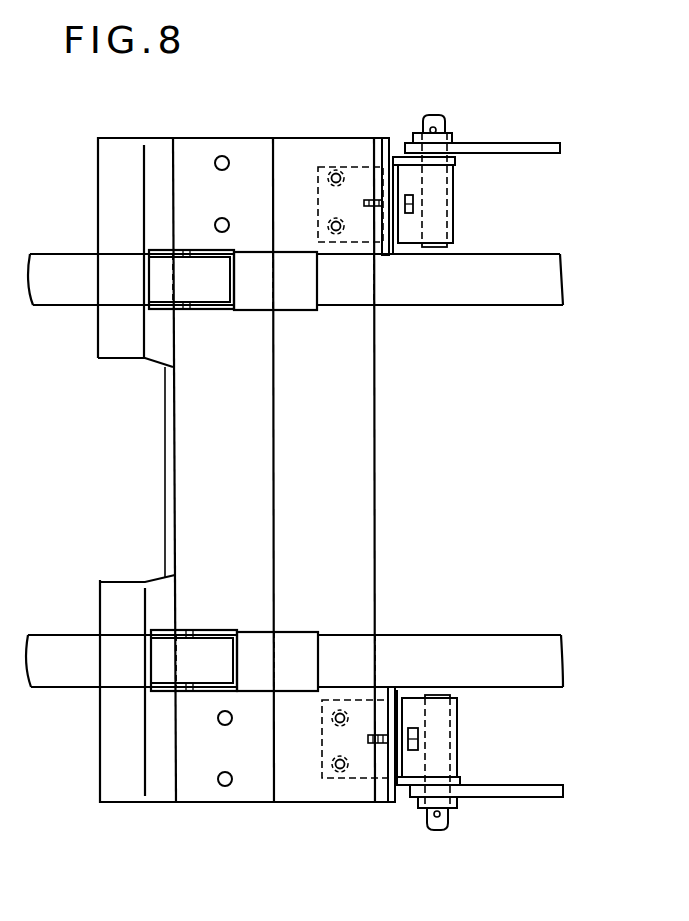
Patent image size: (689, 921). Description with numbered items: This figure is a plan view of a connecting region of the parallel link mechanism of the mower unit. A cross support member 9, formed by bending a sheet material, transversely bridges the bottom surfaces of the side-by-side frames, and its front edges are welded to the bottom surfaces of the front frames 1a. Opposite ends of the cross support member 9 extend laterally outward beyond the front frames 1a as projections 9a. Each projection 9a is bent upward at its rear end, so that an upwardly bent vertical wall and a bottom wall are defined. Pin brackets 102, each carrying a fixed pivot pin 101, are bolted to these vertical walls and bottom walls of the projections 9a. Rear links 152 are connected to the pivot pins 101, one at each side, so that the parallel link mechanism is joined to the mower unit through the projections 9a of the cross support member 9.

The front frame 1a is at (59, 258).
The cross support member 9 is at (363, 450).
The projection 9a is at (322, 139).
The pivot pin 101 is at (436, 115).
The pin bracket 102 is at (453, 220).
The rear link 152 is at (540, 152).